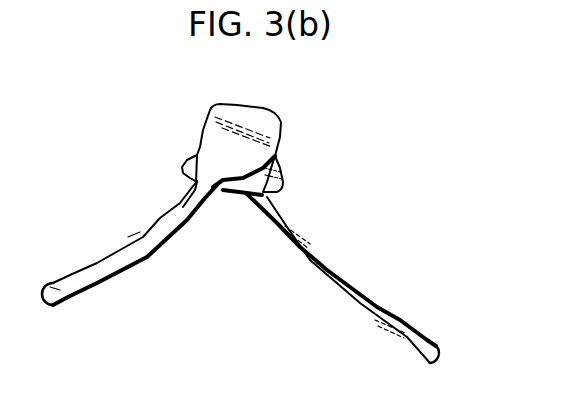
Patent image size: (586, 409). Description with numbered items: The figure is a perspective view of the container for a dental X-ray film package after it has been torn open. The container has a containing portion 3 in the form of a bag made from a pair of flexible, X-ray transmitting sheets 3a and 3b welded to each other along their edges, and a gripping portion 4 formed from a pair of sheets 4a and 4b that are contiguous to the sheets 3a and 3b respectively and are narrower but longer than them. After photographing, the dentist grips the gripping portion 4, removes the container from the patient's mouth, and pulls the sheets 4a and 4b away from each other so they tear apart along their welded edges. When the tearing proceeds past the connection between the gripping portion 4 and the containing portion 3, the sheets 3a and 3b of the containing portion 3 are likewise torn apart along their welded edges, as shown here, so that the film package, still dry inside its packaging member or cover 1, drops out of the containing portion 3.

The packaging member or cover 1 is at (240, 188).
The containing portion 3 is at (267, 124).
The sheet 3a is at (202, 163).
The sheet 3b is at (284, 176).
The gripping portion 4 is at (250, 281).
The sheet 4a is at (117, 260).
The sheet 4b is at (340, 283).